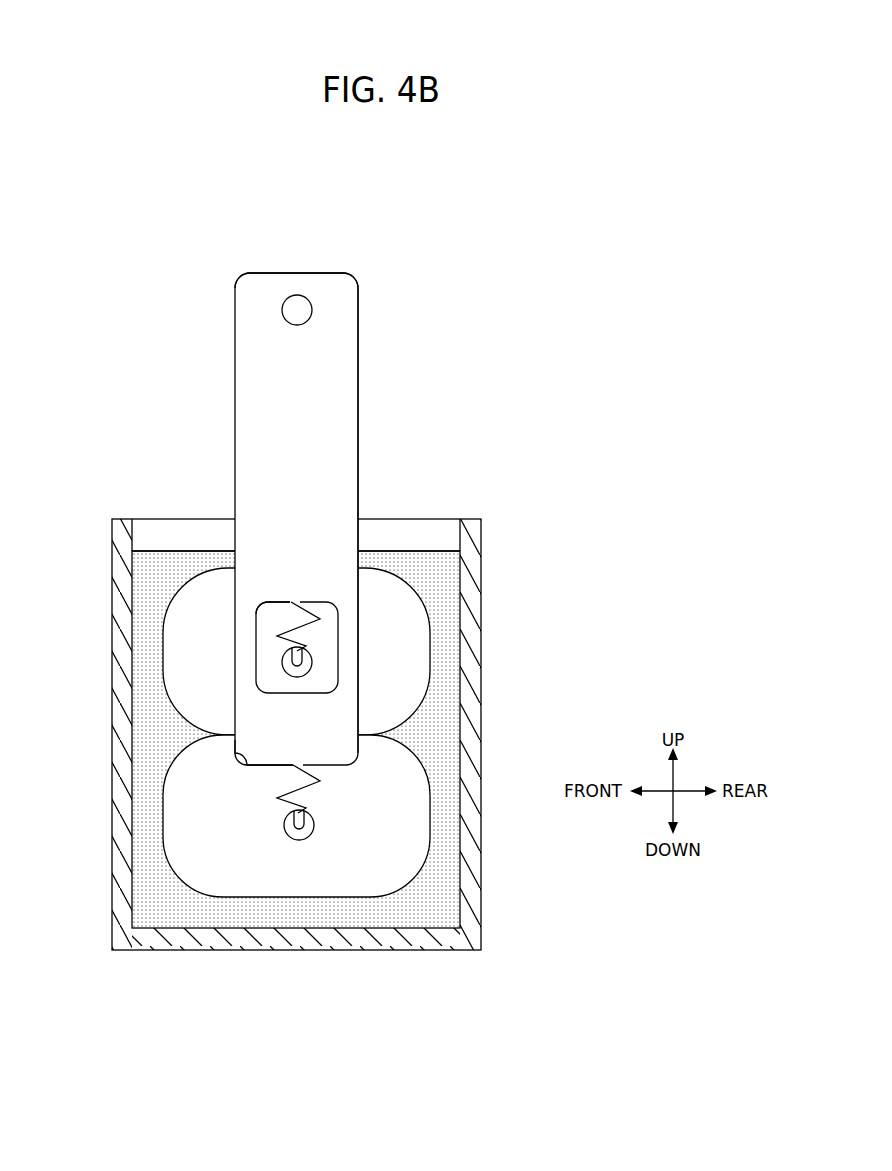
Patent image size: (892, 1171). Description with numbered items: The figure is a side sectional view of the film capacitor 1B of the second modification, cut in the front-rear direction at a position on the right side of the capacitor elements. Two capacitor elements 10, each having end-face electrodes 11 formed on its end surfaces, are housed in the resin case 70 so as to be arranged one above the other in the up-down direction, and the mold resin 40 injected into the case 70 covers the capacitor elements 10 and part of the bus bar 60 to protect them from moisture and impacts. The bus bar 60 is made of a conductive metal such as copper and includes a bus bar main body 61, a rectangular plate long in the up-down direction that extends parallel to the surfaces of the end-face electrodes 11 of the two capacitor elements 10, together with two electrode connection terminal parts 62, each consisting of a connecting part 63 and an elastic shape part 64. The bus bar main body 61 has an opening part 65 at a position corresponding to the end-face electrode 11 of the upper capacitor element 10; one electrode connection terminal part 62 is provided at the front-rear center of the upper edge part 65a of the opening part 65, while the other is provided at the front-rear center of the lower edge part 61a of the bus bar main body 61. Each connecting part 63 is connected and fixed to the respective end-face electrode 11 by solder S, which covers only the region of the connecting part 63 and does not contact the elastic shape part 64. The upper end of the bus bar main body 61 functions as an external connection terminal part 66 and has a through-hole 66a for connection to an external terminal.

The film capacitor 1B is at (157, 418).
The capacitor element 10 is at (223, 572).
The end-face electrode 11 is at (400, 600).
The mold resin 40 is at (385, 550).
The bus bar 60 is at (229, 420).
The bus bar main body 61 is at (358, 412).
The lower edge part 61a is at (273, 767).
The electrode connection terminal part 62 is at (542, 682).
The connecting part 63 is at (313, 667).
The elastic shape part 64 is at (307, 630).
The opening part 65 is at (267, 658).
The upper edge part 65a is at (276, 604).
The external connection terminal part 66 is at (340, 307).
The through-hole 66a is at (282, 308).
The case 70 is at (483, 623).
The solder S is at (296, 677).